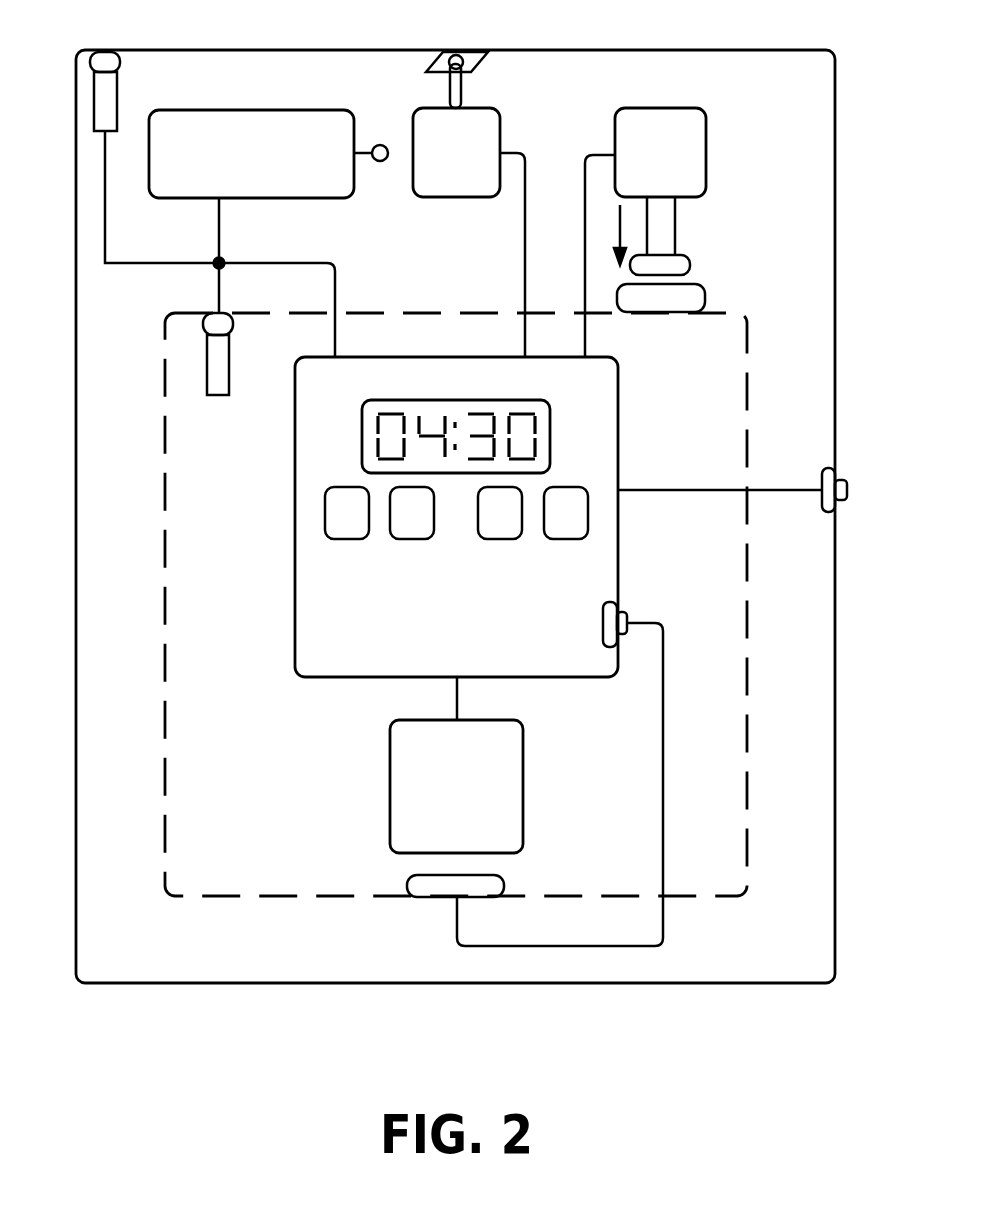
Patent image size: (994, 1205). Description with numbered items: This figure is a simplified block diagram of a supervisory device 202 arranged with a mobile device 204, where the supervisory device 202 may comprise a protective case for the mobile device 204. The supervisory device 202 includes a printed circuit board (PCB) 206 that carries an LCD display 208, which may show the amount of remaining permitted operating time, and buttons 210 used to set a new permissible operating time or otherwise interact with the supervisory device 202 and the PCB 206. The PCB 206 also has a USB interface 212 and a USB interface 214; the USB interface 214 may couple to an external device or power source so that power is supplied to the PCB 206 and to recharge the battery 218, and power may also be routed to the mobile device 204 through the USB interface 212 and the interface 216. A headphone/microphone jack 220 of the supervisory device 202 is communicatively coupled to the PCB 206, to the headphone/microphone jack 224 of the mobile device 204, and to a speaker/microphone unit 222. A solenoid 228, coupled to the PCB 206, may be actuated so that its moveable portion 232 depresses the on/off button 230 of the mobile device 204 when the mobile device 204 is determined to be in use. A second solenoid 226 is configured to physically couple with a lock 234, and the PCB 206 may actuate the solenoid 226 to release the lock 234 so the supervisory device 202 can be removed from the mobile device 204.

The supervisory device 202 is at (816, 50).
The mobile device 204 is at (740, 313).
The printed circuit board 206 is at (611, 357).
The LCD display 208 is at (526, 400).
The buttons 210 is at (330, 540).
The USB interface 212 is at (606, 648).
The USB interface 214 is at (840, 480).
The interface 216 is at (503, 886).
The battery 218 is at (515, 720).
The headphone/microphone jack 220 is at (90, 61).
The speaker/microphone unit 222 is at (308, 110).
The headphone/microphone jack 224 is at (229, 336).
The second solenoid 226 is at (483, 108).
The solenoid 228 is at (688, 108).
The on/off button 230 is at (700, 284).
The moveable portion 232 is at (676, 245).
The lock 234 is at (474, 55).